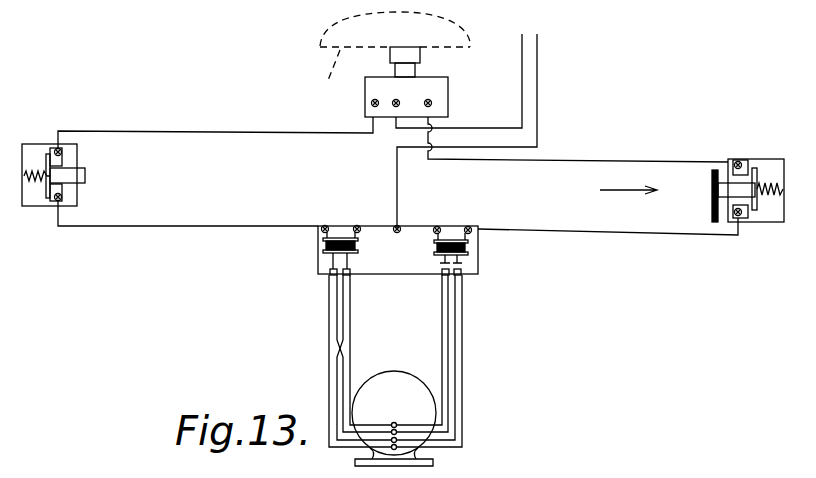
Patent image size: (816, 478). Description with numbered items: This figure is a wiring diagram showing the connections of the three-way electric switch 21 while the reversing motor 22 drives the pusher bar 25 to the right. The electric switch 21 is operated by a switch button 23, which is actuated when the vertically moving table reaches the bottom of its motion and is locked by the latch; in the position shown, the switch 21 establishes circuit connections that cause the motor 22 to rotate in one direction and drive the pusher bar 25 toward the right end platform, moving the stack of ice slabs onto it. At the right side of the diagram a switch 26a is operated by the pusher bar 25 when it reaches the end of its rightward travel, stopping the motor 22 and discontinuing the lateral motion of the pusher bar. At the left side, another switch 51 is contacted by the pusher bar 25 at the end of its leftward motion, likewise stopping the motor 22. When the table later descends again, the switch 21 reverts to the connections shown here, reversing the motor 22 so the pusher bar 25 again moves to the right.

The electric switch 21 is at (370, 87).
The reversing motor 22 is at (393, 372).
The switch button 23 is at (404, 47).
The pusher bar 25 is at (712, 212).
The switch 26a is at (738, 160).
The switch 51 is at (38, 144).